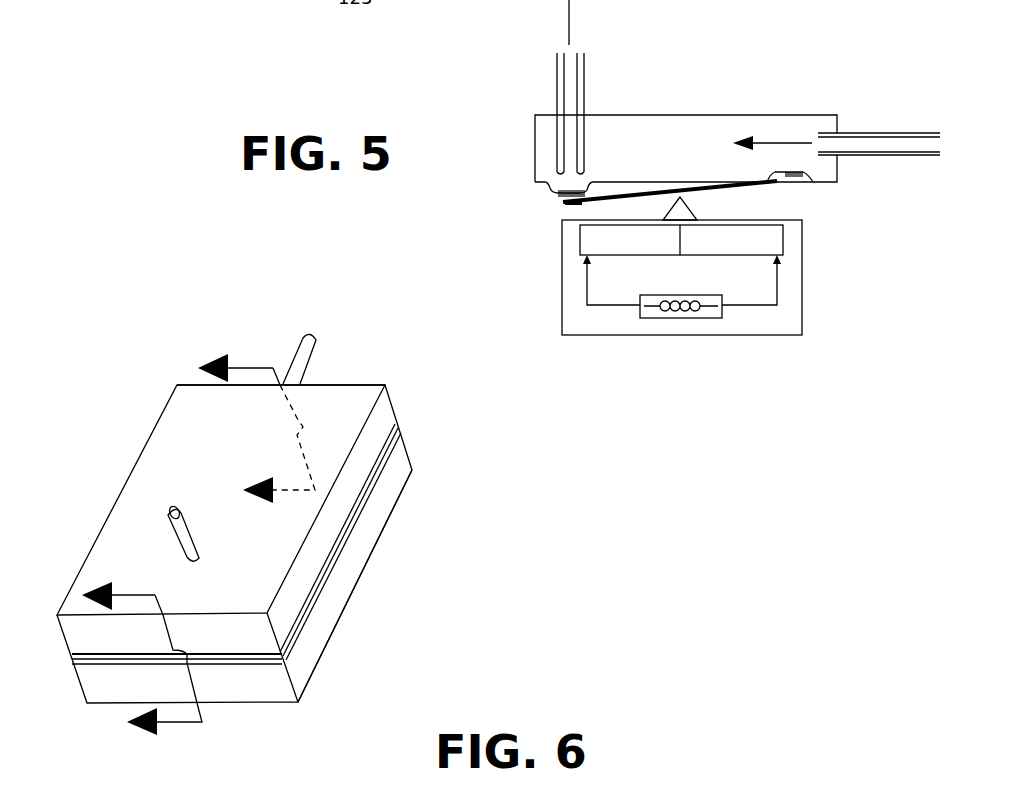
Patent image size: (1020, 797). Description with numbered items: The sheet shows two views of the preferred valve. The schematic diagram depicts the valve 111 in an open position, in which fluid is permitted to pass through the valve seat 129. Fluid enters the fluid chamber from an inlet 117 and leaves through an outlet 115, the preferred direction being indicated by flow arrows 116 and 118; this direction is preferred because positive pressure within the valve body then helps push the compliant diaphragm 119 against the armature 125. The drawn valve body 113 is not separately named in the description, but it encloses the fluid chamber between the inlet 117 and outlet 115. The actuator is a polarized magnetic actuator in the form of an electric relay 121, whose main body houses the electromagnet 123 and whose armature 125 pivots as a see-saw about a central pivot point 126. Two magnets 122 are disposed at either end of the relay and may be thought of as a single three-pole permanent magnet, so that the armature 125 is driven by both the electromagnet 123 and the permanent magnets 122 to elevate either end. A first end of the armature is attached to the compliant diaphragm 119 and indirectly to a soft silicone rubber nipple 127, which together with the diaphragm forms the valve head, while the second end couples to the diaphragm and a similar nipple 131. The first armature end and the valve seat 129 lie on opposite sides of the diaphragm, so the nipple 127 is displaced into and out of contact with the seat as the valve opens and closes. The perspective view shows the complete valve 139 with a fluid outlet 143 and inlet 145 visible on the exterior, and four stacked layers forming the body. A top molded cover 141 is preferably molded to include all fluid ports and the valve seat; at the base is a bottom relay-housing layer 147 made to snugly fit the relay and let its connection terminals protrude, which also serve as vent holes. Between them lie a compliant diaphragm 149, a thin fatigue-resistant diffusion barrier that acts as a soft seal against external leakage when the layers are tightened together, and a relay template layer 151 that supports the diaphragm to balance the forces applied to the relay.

In FIG. 5, the valve 111 is at (828, 27).
In FIG. 5, the housing 113 is at (663, 127).
In FIG. 5, the outlet 115 is at (585, 78).
In FIG. 5, the flow arrow 116 is at (573, 0).
In FIG. 5, the inlet 117 is at (870, 133).
In FIG. 5, the flow arrow 118 is at (762, 143).
In FIG. 5, the compliant diaphragm 119 is at (824, 187).
In FIG. 5, the electric relay 121 is at (766, 340).
In FIG. 5, the magnets 122 is at (588, 243).
In FIG. 5, the electromagnet 123 is at (688, 320).
In FIG. 5, the armature 125 is at (612, 203).
In FIG. 5, the central pivot point 126 is at (683, 212).
In FIG. 5, the silicone rubber nipple 127 is at (558, 201).
In FIG. 5, the valve seat 129 is at (556, 165).
In FIG. 5, the nipple 131 is at (797, 207).
In FIG. 6, the complete valve 139 is at (161, 365).
In FIG. 6, the molded cover 141 is at (350, 390).
In FIG. 6, the fluid outlet 143 is at (177, 527).
In FIG. 6, the inlet 145 is at (310, 350).
In FIG. 6, the relay-housing layer 147 is at (408, 465).
In FIG. 6, the compliant diaphragm 149 is at (397, 425).
In FIG. 6, the relay template layer 151 is at (400, 433).